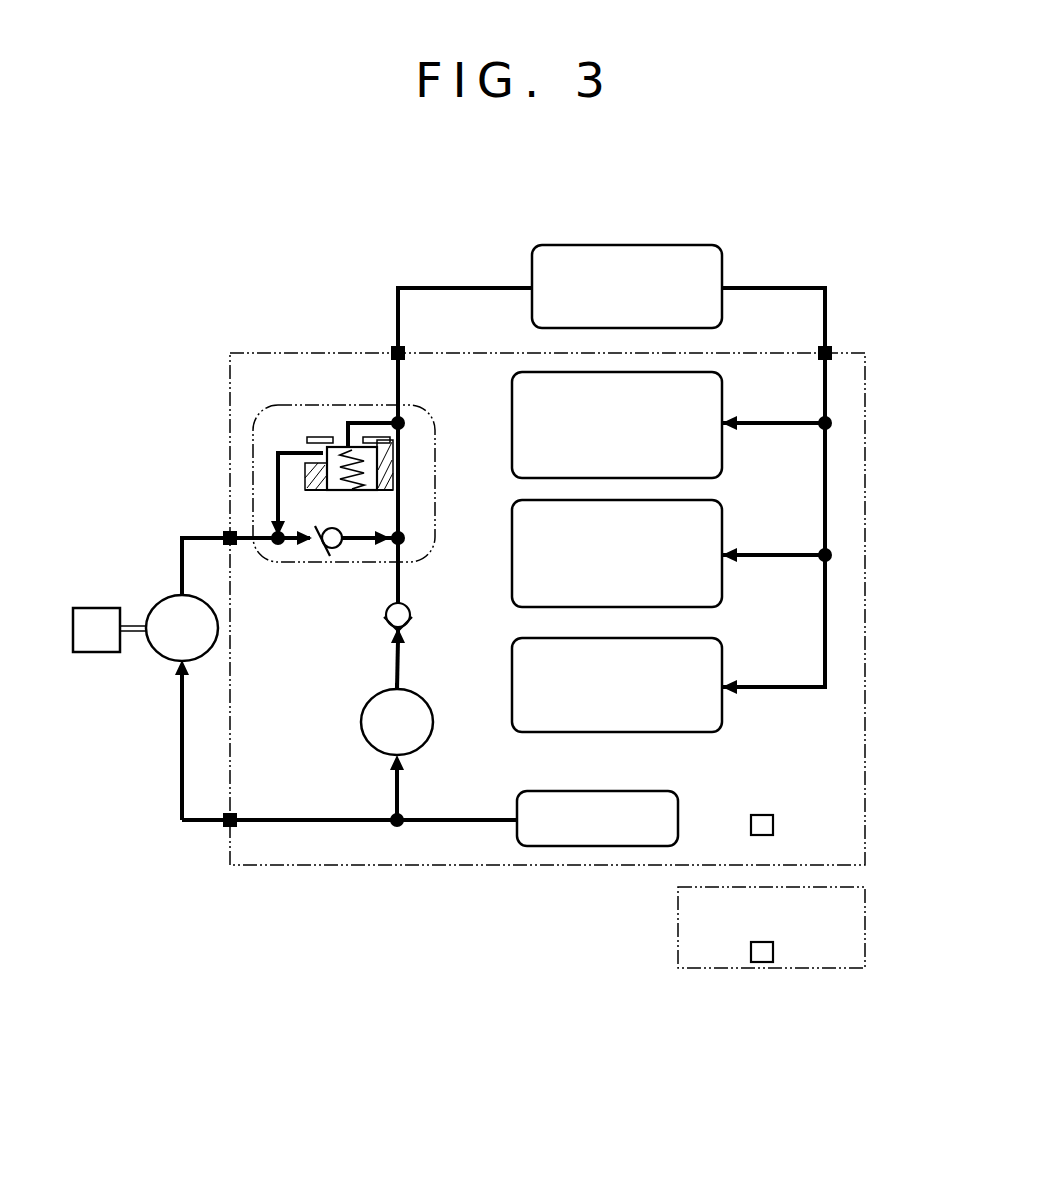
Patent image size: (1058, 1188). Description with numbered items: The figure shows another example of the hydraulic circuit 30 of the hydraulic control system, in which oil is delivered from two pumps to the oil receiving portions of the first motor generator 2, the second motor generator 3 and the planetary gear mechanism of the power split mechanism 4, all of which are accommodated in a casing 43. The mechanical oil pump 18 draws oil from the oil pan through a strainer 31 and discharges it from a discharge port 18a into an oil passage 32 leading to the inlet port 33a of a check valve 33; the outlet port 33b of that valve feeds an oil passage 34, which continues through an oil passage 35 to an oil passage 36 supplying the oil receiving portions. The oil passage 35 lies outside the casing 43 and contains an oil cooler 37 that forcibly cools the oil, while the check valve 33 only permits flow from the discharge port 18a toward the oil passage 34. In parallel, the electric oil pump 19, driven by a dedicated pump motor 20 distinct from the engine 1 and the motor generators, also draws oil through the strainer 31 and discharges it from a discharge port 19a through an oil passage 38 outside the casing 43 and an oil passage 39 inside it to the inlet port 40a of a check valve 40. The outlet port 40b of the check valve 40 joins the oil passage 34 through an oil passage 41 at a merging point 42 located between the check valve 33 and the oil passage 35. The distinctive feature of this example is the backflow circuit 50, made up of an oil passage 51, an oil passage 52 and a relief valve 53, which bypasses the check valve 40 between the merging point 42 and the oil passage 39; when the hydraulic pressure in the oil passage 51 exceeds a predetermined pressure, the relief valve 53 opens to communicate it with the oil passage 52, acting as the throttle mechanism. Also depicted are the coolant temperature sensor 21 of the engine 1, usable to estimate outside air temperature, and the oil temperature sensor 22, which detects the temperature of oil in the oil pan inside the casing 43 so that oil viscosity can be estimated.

The engine 1 is at (677, 935).
The first motor generator 2 is at (725, 385).
The second motor generator 3 is at (725, 513).
The power split mechanism 4 is at (725, 650).
The MOP 18 is at (362, 735).
The discharge port 18a is at (392, 688).
The EOP 19 is at (165, 665).
The discharge port 19a is at (170, 596).
The pump motor 20 is at (95, 656).
The coolant temperature sensor 21 is at (763, 965).
The oil temperature sensor 22 is at (775, 822).
The hydraulic circuit 30 is at (309, 288).
The strainer 31 is at (577, 850).
The oil passage 32 is at (403, 663).
The check valve 33 is at (372, 623).
The inlet port 33a is at (392, 636).
The outlet port 33b is at (405, 599).
The oil passage 34 is at (403, 383).
The oil passage 35 is at (482, 286).
The oil passage 36 is at (830, 505).
The oil cooler 37 is at (670, 243).
The oil passage 38 is at (184, 537).
The oil passage 39 is at (247, 530).
The check valve 40 is at (333, 556).
The inlet port 40a is at (300, 547).
The outlet port 40b is at (360, 546).
The oil passage 41 is at (352, 532).
The merging point 42 is at (405, 541).
The casing 43 is at (295, 868).
The backflow circuit 50 is at (268, 398).
The oil passage 51 is at (370, 410).
The oil passage 52 is at (272, 480).
The relief valve 53 is at (317, 410).